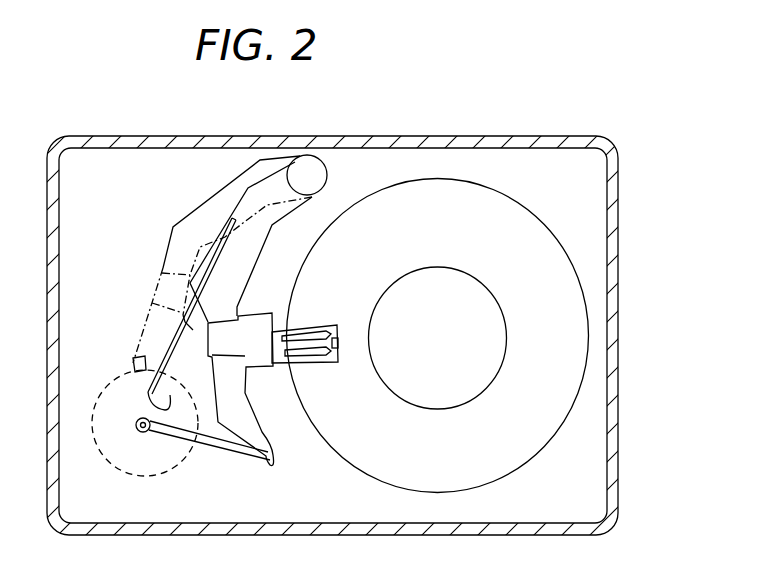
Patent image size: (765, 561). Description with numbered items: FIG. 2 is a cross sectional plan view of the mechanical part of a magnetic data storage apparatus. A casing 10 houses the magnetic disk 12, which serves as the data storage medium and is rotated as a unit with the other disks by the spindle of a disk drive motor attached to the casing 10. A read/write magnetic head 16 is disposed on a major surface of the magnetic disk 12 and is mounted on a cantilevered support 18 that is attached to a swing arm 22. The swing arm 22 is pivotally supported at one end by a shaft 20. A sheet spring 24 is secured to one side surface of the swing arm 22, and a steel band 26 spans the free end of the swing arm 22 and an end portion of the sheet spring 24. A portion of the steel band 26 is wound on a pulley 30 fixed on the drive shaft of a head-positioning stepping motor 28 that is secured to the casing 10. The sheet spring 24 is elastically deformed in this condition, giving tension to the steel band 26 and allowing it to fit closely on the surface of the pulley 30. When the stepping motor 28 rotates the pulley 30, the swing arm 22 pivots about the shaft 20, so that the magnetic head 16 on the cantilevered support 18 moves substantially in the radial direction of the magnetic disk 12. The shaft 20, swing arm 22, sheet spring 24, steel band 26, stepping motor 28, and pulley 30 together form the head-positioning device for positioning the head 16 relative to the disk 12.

The casing 10 is at (516, 146).
The magnetic disk 12 is at (536, 228).
The read/write magnetic head 16 is at (340, 343).
The cantilevered support 18 is at (303, 342).
The shaft 20 is at (307, 162).
The swing arm 22 is at (225, 268).
The sheet spring 24 is at (152, 357).
The steel band 26 is at (237, 450).
The head-positioning stepping motor 28 is at (192, 443).
The pulley 30 is at (140, 432).